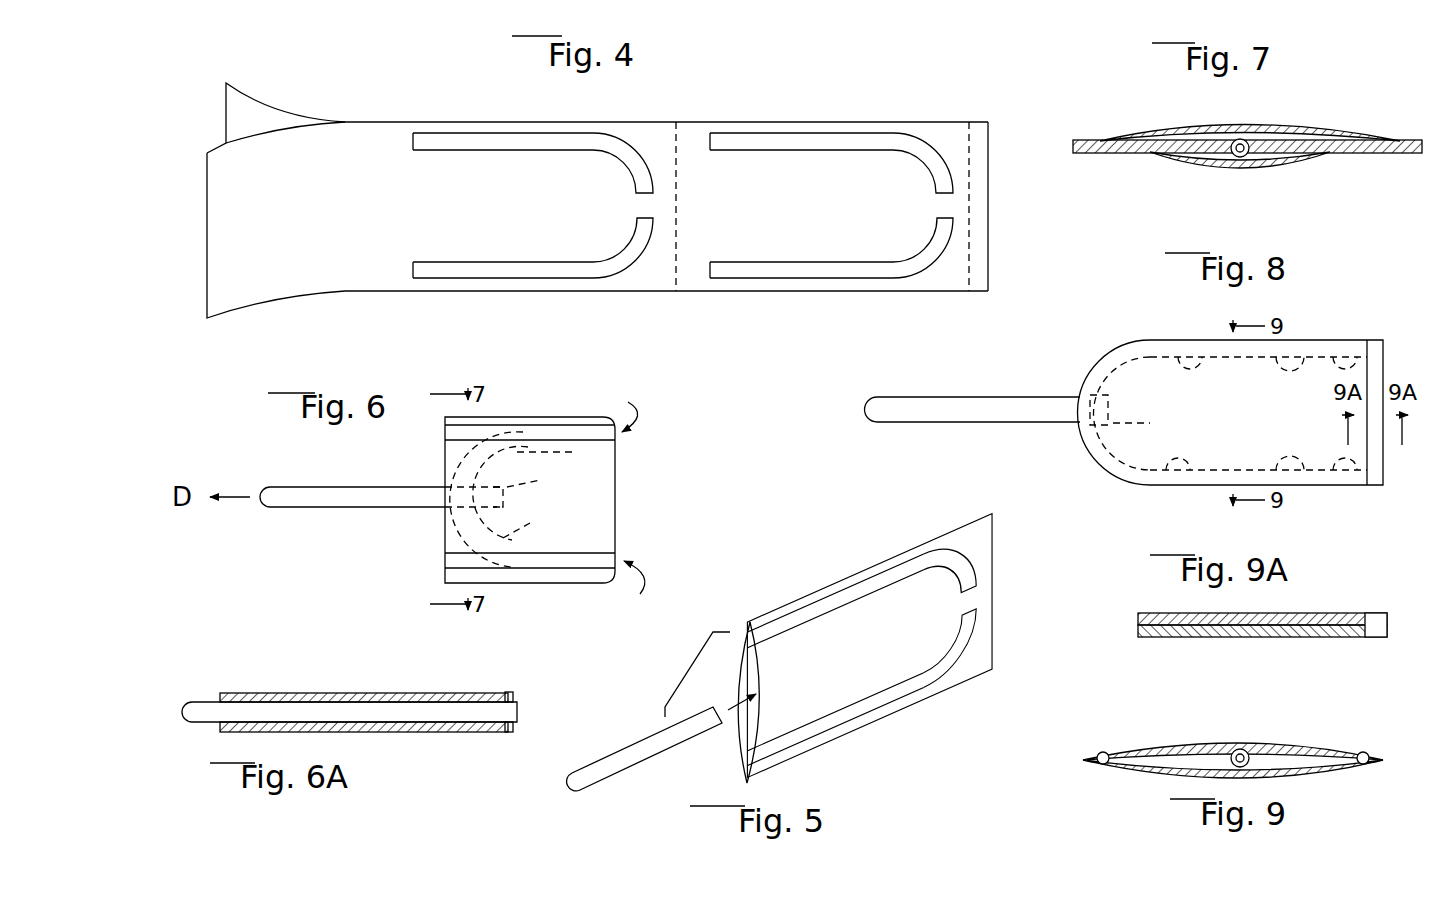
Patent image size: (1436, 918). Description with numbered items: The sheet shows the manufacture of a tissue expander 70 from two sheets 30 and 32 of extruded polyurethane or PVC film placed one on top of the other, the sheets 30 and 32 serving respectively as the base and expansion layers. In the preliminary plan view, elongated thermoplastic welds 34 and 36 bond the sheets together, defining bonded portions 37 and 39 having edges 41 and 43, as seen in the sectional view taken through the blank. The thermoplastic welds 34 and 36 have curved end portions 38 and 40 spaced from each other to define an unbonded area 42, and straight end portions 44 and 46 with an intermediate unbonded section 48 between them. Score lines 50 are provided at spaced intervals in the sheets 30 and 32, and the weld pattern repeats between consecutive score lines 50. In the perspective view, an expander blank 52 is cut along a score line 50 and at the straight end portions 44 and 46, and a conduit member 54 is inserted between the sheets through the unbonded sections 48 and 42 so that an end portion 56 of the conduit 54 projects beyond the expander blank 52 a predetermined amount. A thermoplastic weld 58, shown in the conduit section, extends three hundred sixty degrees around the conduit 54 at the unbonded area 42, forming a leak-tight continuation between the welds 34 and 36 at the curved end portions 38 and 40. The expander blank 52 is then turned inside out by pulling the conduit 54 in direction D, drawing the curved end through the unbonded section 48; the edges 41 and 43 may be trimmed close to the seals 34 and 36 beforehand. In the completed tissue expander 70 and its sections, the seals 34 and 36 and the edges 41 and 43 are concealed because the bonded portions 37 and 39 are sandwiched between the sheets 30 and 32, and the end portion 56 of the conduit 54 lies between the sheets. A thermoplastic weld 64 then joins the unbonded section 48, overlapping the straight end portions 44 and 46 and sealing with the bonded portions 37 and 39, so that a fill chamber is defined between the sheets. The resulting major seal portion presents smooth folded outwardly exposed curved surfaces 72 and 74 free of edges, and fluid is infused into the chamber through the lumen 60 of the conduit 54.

In FIG. 4, the sheet 30 is at (280, 103).
In FIG. 7, the sheet 30 is at (1190, 168).
In FIG. 5, the sheet 30 is at (740, 668).
In FIG. 9A, the sheet 30 is at (1310, 637).
In FIG. 9, the sheet 30 is at (1140, 772).
In FIG. 4, the sheet 32 is at (216, 160).
In FIG. 7, the sheet 32 is at (1196, 132).
In FIG. 8, the sheet 32 is at (1231, 412).
In FIG. 6, the sheet 32 is at (530, 500).
In FIG. 6A, the sheet 32 is at (285, 692).
In FIG. 5, the sheet 32 is at (760, 725).
In FIG. 9A, the sheet 32 is at (1333, 613).
In FIG. 9, the sheet 32 is at (1183, 740).
In FIG. 4, the thermoplastic weld 34 is at (510, 132).
In FIG. 7, the thermoplastic weld 34 is at (1400, 140).
In FIG. 8, the thermoplastic weld 34 is at (1320, 340).
In FIG. 6, the thermoplastic weld 34 is at (580, 420).
In FIG. 6A, the thermoplastic weld 34 is at (410, 731).
In FIG. 5, the thermoplastic weld 34 is at (858, 590).
In FIG. 9, the thermoplastic weld 34 is at (1112, 745).
In FIG. 4, the thermoplastic weld 36 is at (812, 265).
In FIG. 7, the thermoplastic weld 36 is at (1105, 140).
In FIG. 8, the thermoplastic weld 36 is at (1178, 486).
In FIG. 6, the thermoplastic weld 36 is at (565, 570).
In FIG. 5, the thermoplastic weld 36 is at (890, 705).
In FIG. 9, the thermoplastic weld 36 is at (1372, 744).
In FIG. 7, the bonded portion 37 is at (1395, 140).
In FIG. 8, the bonded portion 37 is at (1226, 362).
In FIG. 4, the curved end portion 38 is at (628, 157).
In FIG. 8, the curved end portion 38 is at (1120, 352).
In FIG. 6, the curved end portion 38 is at (560, 454).
In FIG. 5, the curved end portion 38 is at (965, 585).
In FIG. 7, the bonded portion 39 is at (1090, 140).
In FIG. 8, the bonded portion 39 is at (1238, 469).
In FIG. 4, the curved end portion 40 is at (945, 240).
In FIG. 8, the curved end portion 40 is at (1092, 462).
In FIG. 6, the curved end portion 40 is at (505, 499).
In FIG. 5, the curved end portion 40 is at (978, 632).
In FIG. 7, the edge 41 is at (1418, 157).
In FIG. 8, the edge 41 is at (1180, 352).
In FIG. 6, the edge 41 is at (498, 415).
In FIG. 5, the edge 41 is at (890, 560).
In FIG. 9, the edge 41 is at (1120, 774).
In FIG. 4, the unbonded area 42 is at (948, 204).
In FIG. 5, the unbonded area 42 is at (975, 598).
In FIG. 7, the edge 43 is at (1080, 157).
In FIG. 8, the edge 43 is at (1300, 486).
In FIG. 6, the edge 43 is at (520, 583).
In FIG. 5, the edge 43 is at (872, 725).
In FIG. 9, the edge 43 is at (1338, 775).
In FIG. 4, the straight end portion 44 is at (420, 131).
In FIG. 8, the straight end portion 44 is at (1350, 343).
In FIG. 6, the straight end portion 44 is at (450, 435).
In FIG. 5, the straight end portion 44 is at (786, 620).
In FIG. 4, the straight end portion 46 is at (422, 280).
In FIG. 8, the straight end portion 46 is at (1352, 486).
In FIG. 6, the straight end portion 46 is at (450, 558).
In FIG. 5, the straight end portion 46 is at (775, 758).
In FIG. 4, the unbonded section 48 is at (386, 153).
In FIG. 6, the unbonded section 48 is at (450, 463).
In FIG. 6A, the unbonded section 48 is at (220, 693).
In FIG. 5, the unbonded section 48 is at (740, 682).
In FIG. 4, the score line 50 is at (680, 130).
In FIG. 7, the expander blank 52 is at (1316, 132).
In FIG. 6, the expander blank 52 is at (528, 416).
In FIG. 6A, the expander blank 52 is at (356, 689).
In FIG. 5, the expander blank 52 is at (924, 542).
In FIG. 7, the conduit member 54 is at (1262, 138).
In FIG. 8, the conduit member 54 is at (930, 415).
In FIG. 6, the conduit member 54 is at (292, 505).
In FIG. 6A, the conduit member 54 is at (198, 700).
In FIG. 5, the conduit member 54 is at (603, 780).
In FIG. 9, the conduit member 54 is at (1213, 742).
In FIG. 8, the end portion 56 is at (1136, 415).
In FIG. 6, the end portion 56 is at (539, 472).
In FIG. 6A, the end portion 56 is at (520, 717).
In FIG. 5, the end portion 56 is at (723, 720).
In FIG. 9, the end portion 56 is at (1283, 745).
In FIG. 8, the thermoplastic weld 58 is at (1076, 425).
In FIG. 6, the thermoplastic weld 58 is at (476, 514).
In FIG. 6A, the thermoplastic weld 58 is at (498, 692).
In FIG. 7, the lumen 60 is at (1255, 158).
In FIG. 9, the lumen 60 is at (1248, 750).
In FIG. 8, the thermoplastic weld 64 is at (1384, 464).
In FIG. 9A, the thermoplastic weld 64 is at (1366, 615).
In FIG. 8, the tissue expander 70 is at (1150, 336).
In FIG. 9, the tissue expander 70 is at (1321, 735).
In FIG. 8, the curved surface 72 is at (1198, 345).
In FIG. 9, the curved surface 72 is at (1092, 748).
In FIG. 9, the curved surface 74 is at (1085, 775).